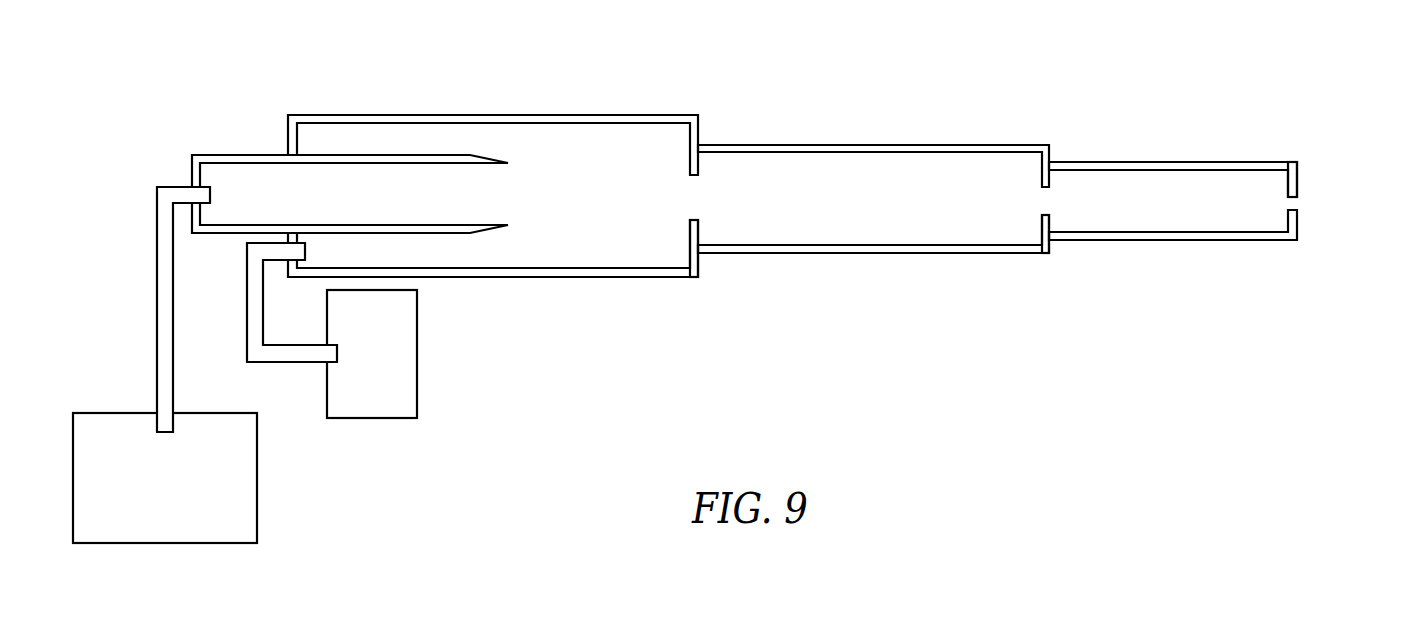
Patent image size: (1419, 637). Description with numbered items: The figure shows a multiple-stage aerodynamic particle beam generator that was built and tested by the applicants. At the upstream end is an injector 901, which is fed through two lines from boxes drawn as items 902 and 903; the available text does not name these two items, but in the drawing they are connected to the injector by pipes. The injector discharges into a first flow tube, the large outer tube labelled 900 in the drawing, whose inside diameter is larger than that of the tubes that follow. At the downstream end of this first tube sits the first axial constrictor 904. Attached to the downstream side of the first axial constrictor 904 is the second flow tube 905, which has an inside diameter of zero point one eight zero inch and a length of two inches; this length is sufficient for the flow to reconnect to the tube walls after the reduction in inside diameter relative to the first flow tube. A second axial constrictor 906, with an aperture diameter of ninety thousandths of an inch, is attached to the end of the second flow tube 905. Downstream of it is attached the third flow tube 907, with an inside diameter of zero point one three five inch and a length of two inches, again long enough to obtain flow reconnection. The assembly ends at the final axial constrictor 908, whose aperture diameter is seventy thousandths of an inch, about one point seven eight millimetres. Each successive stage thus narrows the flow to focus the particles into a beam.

The outer tube 900 is at (532, 100).
The injector 901 is at (230, 80).
The first fluid source 902 is at (165, 365).
The second fluid source 903 is at (332, 330).
The first axial constrictor 904 is at (710, 265).
The second flow tube 905 is at (860, 265).
The second axial constrictor 906 is at (1062, 252).
The third flow tube 907 is at (1208, 255).
The final axial constrictor 908 is at (1310, 177).